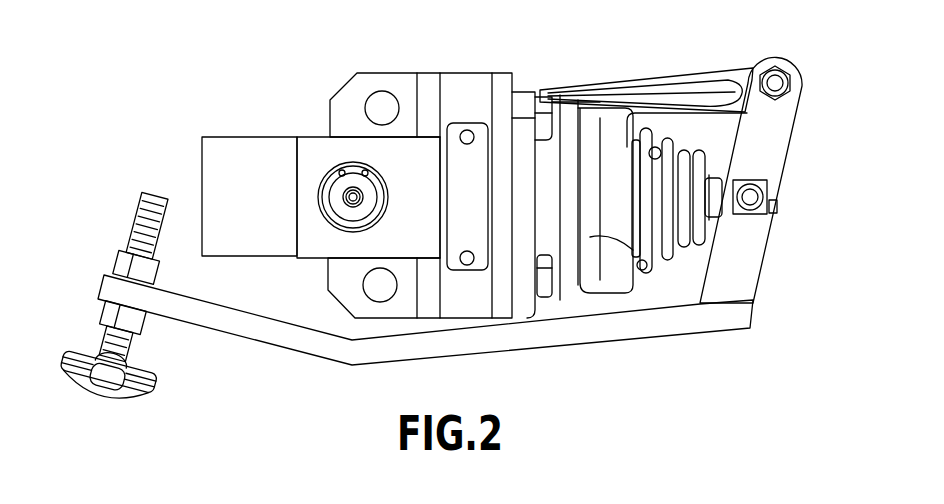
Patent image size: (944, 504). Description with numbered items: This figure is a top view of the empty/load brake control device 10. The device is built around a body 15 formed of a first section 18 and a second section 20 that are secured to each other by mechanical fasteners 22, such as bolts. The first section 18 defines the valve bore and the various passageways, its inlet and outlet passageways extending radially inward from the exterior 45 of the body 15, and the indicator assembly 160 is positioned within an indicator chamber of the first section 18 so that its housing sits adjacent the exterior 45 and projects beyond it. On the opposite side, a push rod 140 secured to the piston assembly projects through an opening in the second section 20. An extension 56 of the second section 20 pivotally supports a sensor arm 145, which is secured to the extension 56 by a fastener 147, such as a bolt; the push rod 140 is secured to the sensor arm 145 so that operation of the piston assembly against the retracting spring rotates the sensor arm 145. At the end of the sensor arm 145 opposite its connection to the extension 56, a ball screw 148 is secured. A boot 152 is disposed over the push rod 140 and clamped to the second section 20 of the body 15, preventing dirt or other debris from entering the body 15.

The empty/load brake control device 10 is at (278, 61).
The body 15 is at (463, 73).
The first section 18 is at (380, 73).
The second section 20 is at (578, 127).
The mechanical fasteners 22 is at (545, 277).
The exterior 45 is at (261, 204).
The extension 56 is at (720, 82).
The push rod 140 is at (727, 177).
The sensor arm 145 is at (278, 333).
The fastener 147 is at (788, 75).
The ball screw 148 is at (110, 407).
The boot 152 is at (705, 243).
The indicator assembly 160 is at (345, 193).